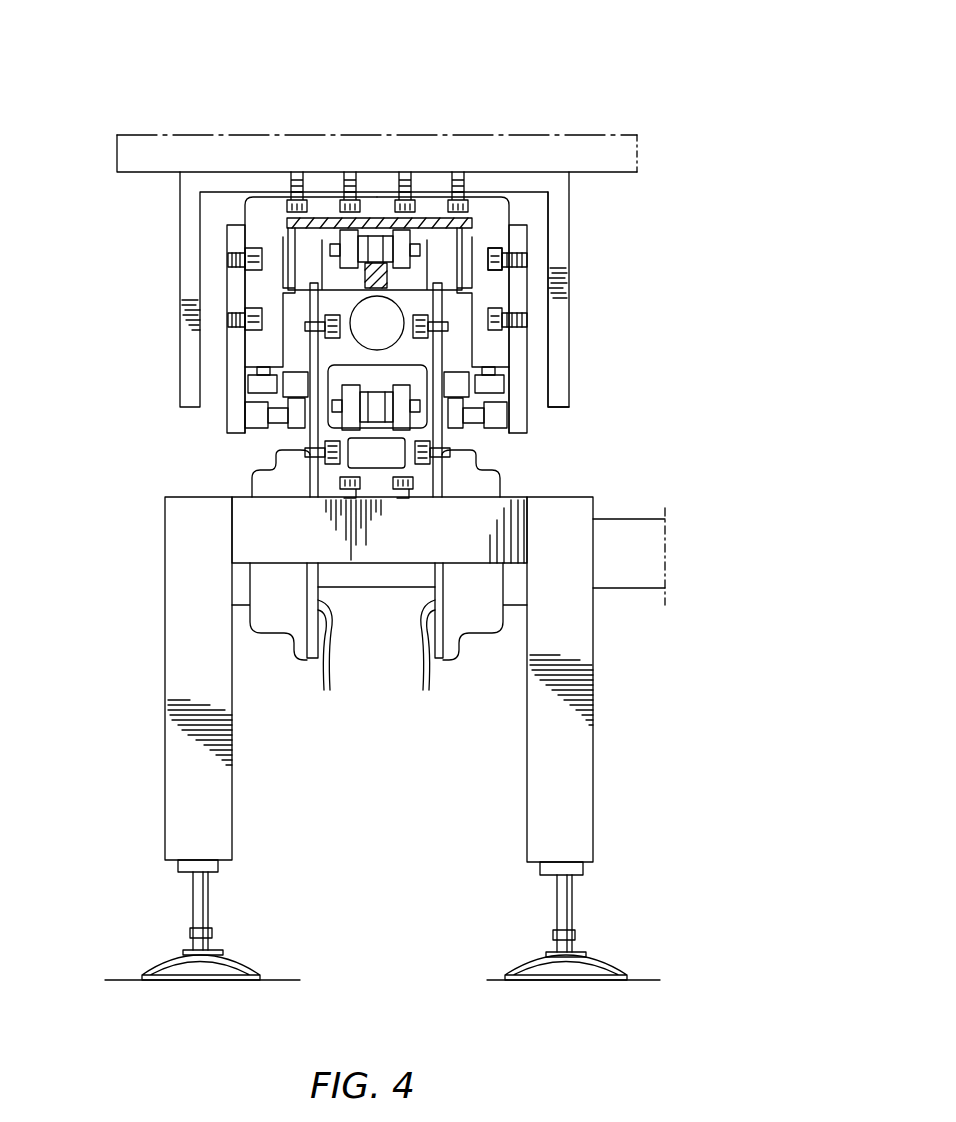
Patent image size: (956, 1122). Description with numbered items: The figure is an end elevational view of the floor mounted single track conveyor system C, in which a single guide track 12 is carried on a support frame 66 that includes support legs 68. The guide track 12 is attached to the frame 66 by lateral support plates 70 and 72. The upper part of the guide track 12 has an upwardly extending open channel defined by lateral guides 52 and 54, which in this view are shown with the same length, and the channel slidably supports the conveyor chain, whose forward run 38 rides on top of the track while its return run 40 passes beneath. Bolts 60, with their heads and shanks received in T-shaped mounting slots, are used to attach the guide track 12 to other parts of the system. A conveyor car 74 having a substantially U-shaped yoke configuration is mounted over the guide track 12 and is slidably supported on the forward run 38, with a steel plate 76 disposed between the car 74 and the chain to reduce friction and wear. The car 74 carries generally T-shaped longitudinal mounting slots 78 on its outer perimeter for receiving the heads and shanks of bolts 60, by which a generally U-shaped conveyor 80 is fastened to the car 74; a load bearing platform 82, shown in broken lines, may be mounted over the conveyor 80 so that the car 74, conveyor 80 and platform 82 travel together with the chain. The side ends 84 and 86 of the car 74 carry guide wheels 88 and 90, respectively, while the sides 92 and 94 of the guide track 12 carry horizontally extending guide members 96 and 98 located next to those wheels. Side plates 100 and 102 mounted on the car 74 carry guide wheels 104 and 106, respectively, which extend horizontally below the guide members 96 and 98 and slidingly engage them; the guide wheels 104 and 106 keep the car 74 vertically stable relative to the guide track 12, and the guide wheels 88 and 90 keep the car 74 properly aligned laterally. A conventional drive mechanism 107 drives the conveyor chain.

The single track conveyor system C is at (598, 62).
The load bearing platform 82 is at (637, 135).
The conveyor car 74 is at (510, 208).
The steel plate 76 is at (295, 222).
The mounting slots 78 is at (245, 258).
The side plate 100 is at (227, 300).
The lateral guide 54 is at (300, 222).
The lateral guide 52 is at (440, 248).
The forward run 38 is at (437, 262).
The bolts 60 is at (553, 272).
The side of guide track 94 is at (443, 347).
The guide track 12 is at (430, 347).
The side end of car 84 is at (252, 345).
The side of guide track 92 is at (300, 347).
The side end of car 86 is at (497, 365).
The conveyor 80 is at (569, 400).
The guide wheel 88 is at (248, 385).
The guide wheel 90 is at (505, 386).
The guide member 96 is at (287, 392).
The guide member 98 is at (490, 415).
The guide wheels 104 is at (302, 425).
The side plate 102 is at (518, 428).
The guide wheels 106 is at (465, 430).
The return run 40 is at (330, 440).
The drive mechanism 107 is at (503, 488).
The support frame 66 is at (148, 690).
The support legs 68 is at (235, 740).
The lateral support plate 70 is at (323, 632).
The lateral support plate 72 is at (445, 632).